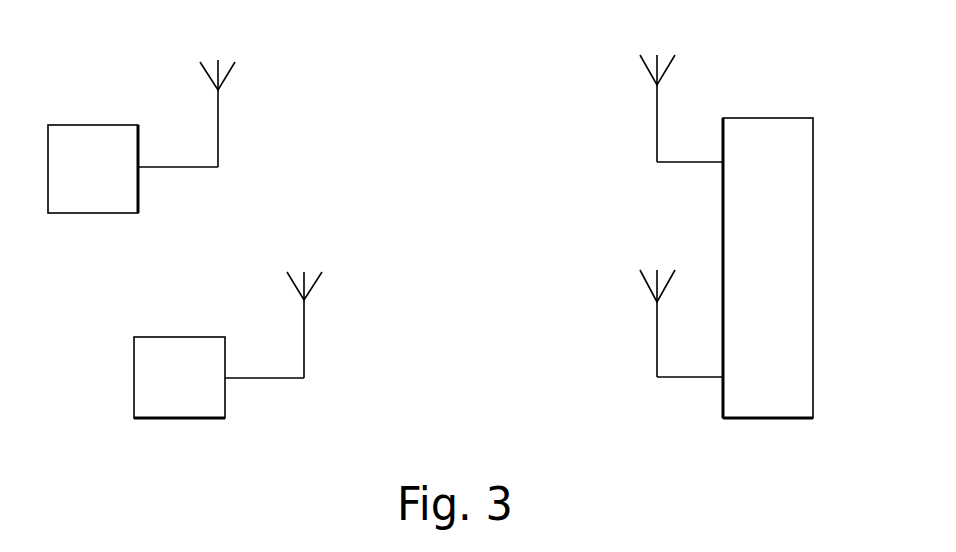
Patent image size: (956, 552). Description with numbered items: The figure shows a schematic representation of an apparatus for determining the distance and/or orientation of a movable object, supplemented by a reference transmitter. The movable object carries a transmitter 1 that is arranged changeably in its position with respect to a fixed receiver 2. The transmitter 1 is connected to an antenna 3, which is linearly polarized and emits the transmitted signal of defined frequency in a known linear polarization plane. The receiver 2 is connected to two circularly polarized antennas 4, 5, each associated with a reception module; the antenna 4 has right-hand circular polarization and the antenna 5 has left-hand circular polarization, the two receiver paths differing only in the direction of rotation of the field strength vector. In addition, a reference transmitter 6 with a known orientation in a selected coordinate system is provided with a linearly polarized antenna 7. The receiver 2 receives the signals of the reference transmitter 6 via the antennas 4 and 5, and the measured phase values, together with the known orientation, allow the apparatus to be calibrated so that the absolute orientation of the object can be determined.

The transmitter 1 is at (87, 195).
The receiver 2 is at (792, 188).
The antenna 3 is at (220, 122).
The antenna 4 is at (657, 98).
The antenna 5 is at (655, 352).
The reference transmitter 6 is at (153, 350).
The linearly polarized antenna 7 is at (308, 330).